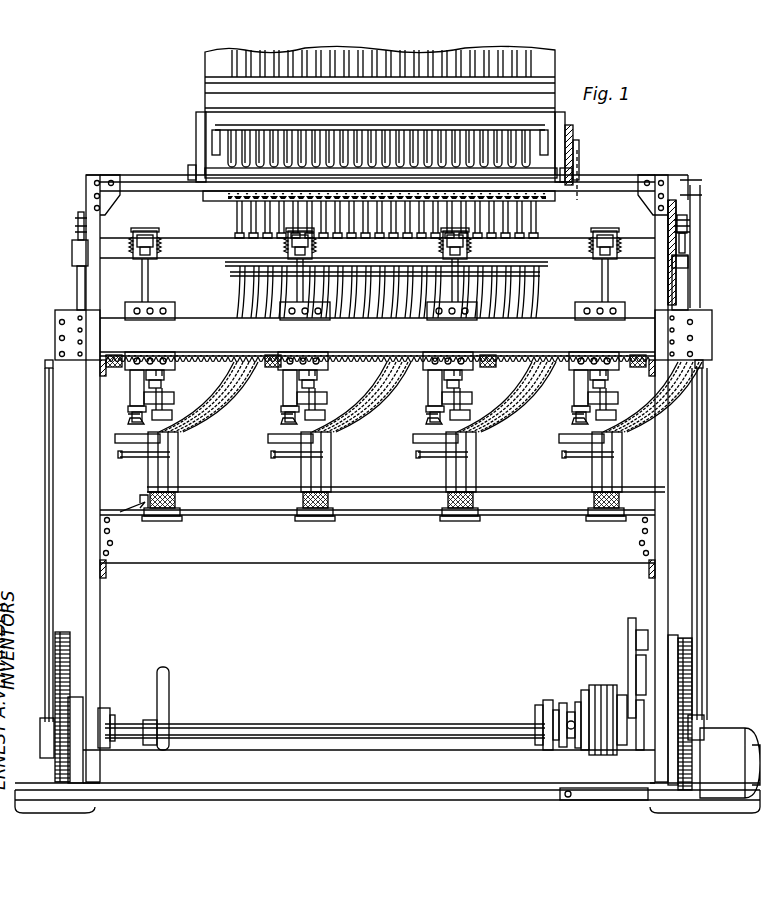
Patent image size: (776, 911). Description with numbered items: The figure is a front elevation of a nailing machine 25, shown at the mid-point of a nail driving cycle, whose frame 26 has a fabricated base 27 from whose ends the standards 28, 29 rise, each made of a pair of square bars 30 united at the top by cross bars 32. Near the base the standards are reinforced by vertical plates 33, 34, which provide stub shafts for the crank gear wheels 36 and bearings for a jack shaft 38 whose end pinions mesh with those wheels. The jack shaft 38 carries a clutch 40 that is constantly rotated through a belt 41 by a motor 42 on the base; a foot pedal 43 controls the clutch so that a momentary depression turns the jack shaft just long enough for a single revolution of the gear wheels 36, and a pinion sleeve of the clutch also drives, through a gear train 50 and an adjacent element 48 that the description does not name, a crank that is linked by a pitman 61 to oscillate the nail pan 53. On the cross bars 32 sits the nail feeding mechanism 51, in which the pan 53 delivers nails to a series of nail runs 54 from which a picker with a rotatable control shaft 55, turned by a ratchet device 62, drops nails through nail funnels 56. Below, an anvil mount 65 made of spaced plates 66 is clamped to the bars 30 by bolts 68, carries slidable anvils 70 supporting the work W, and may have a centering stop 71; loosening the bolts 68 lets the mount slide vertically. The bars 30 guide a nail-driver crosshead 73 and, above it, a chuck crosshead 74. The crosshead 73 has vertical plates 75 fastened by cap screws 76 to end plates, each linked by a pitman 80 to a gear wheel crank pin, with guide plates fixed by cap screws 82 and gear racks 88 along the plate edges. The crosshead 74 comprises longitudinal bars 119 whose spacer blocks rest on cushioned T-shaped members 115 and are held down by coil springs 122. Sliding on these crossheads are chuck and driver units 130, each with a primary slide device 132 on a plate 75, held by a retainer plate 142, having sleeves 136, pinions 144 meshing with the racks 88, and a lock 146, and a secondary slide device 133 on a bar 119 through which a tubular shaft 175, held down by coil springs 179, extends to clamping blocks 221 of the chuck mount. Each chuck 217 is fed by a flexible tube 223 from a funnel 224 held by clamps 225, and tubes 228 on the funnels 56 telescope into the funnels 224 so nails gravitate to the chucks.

The nailing machine 25 is at (49, 149).
The frame 26 is at (288, 812).
The fabricated base 27 is at (580, 165).
The standard 28 is at (106, 642).
The standard 29 is at (637, 603).
The bars 30 is at (94, 295).
The cross bars 32 is at (618, 185).
The vertical plate 33 is at (85, 703).
The vertical plate 34 is at (672, 658).
The crank gear wheels 36 is at (67, 638).
The jack shaft 38 is at (368, 728).
The clutch 40 is at (557, 685).
The belt 41 is at (585, 660).
The motor 42 is at (720, 730).
The foot pedal 43 is at (594, 792).
The coupling 48 is at (634, 746).
The gear train 50 is at (615, 645).
The nail feeding mechanism 51 is at (613, 116).
The nail pan 53 is at (555, 62).
The nail runs 54 is at (373, 145).
The control shaft 55 is at (565, 167).
The nail funnels 56 is at (228, 200).
The pitman 61 is at (697, 269).
The ratchet device 62 is at (565, 146).
The anvil mount 65 is at (439, 563).
The plates 66 is at (470, 566).
The bolts 68 is at (110, 532).
The anvils 70 is at (175, 510).
The stop 71 is at (138, 492).
The nail-driver supporting crosshead 73 is at (55, 307).
The chuck supporting crosshead 74 is at (64, 249).
The vertical plates 75 is at (220, 318).
The cap screws 76 is at (62, 338).
The pitman 80 is at (47, 477).
The cap screws 82 is at (62, 365).
The gear racks 88 is at (242, 354).
The T-shaped member 115 is at (680, 304).
The longitudinal bars 119 is at (537, 264).
The coil springs 122 is at (687, 234).
The chuck and driver units 130 is at (174, 293).
The primary slide device 132 is at (606, 324).
The secondary slide device 133 is at (130, 222).
The tubular sleeve 136 is at (142, 384).
The retainer plate 142 is at (314, 354).
The pinions 144 is at (270, 373).
The lock 146 is at (444, 327).
The tubular shaft 175 is at (293, 416).
The coil springs 179 is at (628, 290).
The chucks 217 is at (180, 460).
The blocks 221 is at (282, 435).
The flexible tube 223 is at (200, 417).
The funnel 224 is at (525, 241).
The clamps 225 is at (529, 270).
The tubes 228 is at (525, 221).
The work W is at (207, 487).